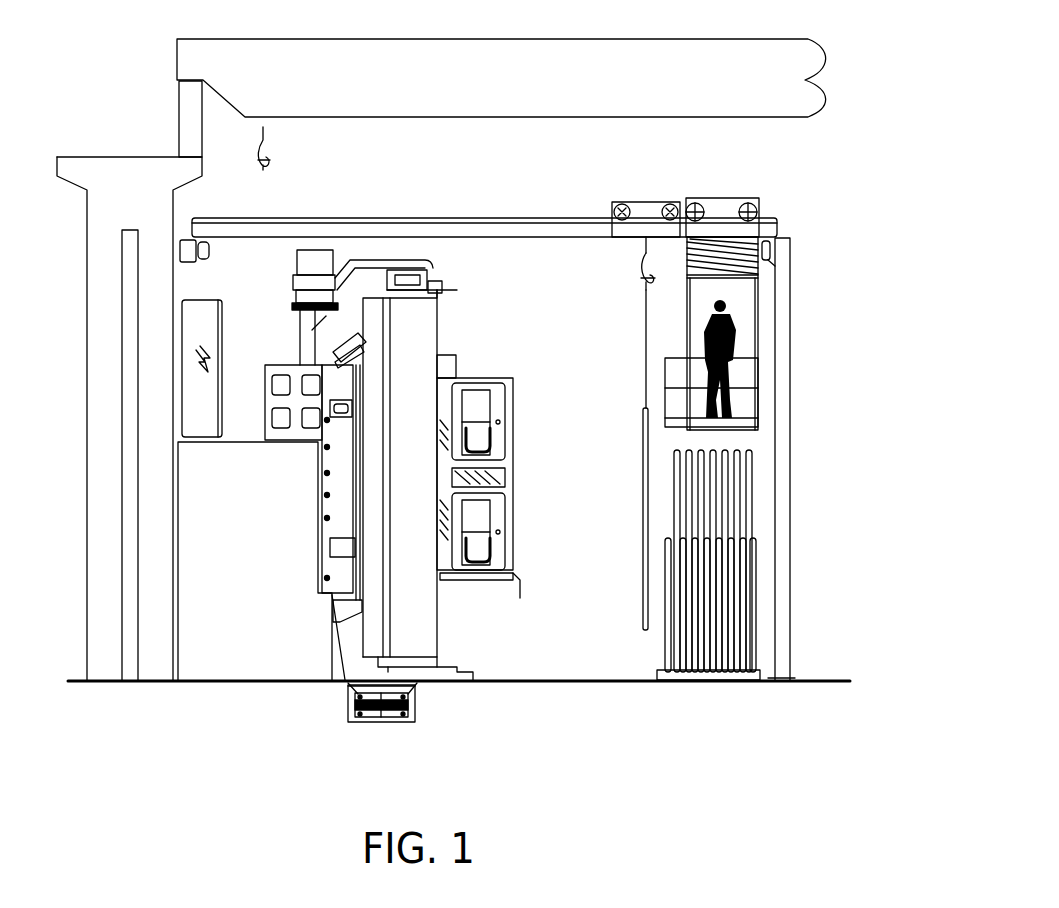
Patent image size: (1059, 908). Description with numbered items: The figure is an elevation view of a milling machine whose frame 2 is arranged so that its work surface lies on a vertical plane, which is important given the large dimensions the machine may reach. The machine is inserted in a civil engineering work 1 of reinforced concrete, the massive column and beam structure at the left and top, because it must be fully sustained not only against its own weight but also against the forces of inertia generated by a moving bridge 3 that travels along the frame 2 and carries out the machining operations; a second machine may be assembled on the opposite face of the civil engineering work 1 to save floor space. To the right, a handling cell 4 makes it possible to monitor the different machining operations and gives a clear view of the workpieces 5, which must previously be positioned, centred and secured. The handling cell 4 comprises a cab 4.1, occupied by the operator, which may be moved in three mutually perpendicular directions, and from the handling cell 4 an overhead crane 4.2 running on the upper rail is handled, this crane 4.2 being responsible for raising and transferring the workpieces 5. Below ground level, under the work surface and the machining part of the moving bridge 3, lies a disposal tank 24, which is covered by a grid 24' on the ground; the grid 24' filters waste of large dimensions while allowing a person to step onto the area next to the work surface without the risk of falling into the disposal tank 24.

The civil engineering work 1 is at (240, 590).
The frame 2 is at (300, 445).
The moving bridge 3 is at (458, 600).
The handling cell 4 is at (737, 192).
The cab 4.1 is at (748, 318).
The crane 4.2 is at (631, 192).
The workpieces 5 is at (743, 487).
The disposal tank 24 is at (421, 727).
The grid 24' is at (423, 710).